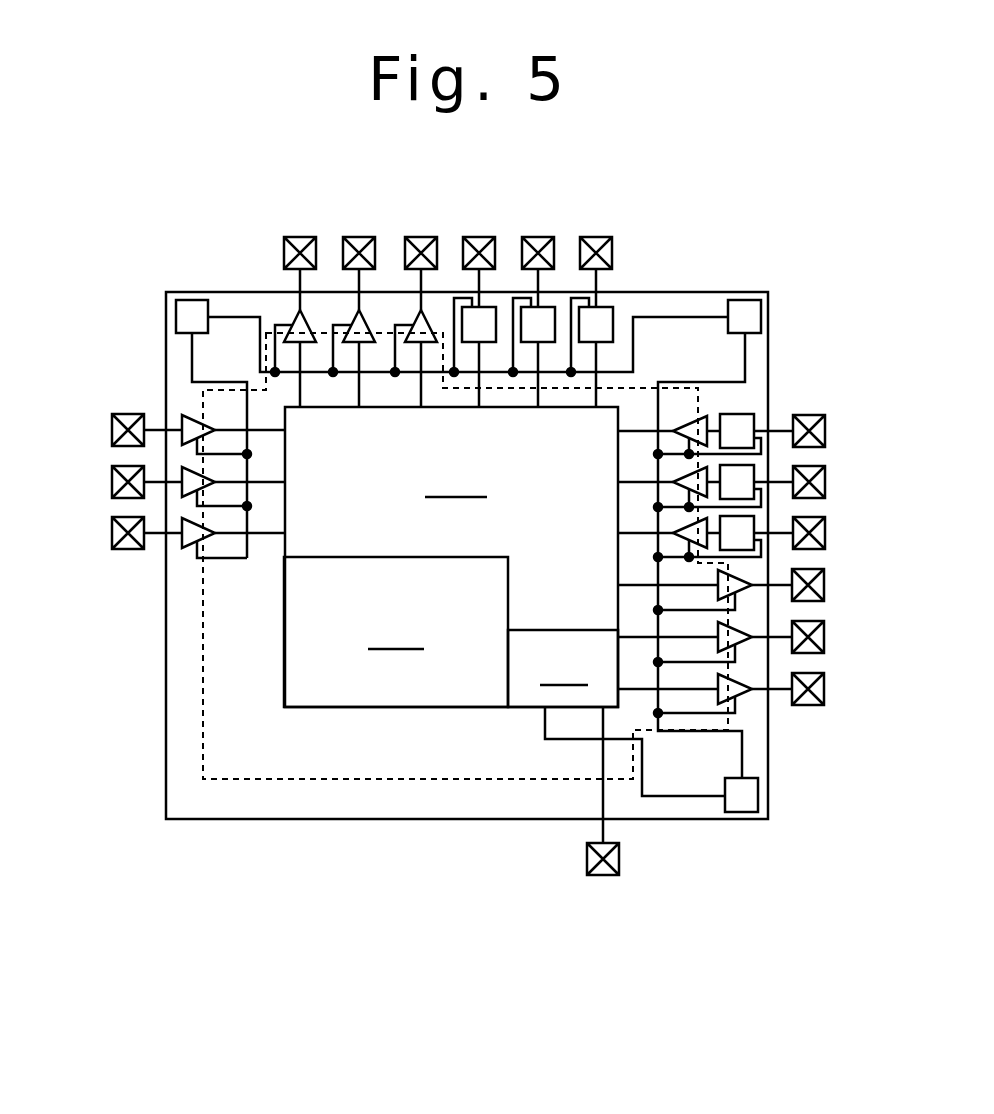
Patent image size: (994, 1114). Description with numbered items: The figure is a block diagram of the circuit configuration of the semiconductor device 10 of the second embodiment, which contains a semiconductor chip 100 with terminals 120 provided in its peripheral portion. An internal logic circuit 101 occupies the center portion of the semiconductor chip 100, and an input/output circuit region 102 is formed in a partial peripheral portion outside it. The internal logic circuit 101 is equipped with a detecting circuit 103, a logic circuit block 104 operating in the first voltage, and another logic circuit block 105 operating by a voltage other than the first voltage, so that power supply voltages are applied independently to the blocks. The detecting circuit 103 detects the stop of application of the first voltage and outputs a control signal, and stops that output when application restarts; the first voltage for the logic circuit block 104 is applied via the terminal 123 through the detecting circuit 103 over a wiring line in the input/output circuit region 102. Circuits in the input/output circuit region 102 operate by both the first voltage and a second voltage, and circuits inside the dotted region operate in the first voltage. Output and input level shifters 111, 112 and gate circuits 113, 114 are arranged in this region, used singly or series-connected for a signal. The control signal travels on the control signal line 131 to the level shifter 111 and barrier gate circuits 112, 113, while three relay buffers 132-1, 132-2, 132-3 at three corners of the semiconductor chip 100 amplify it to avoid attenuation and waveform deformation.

The semiconductor device 10 is at (86, 354).
The semiconductor chip 100 is at (282, 820).
The internal logic circuit 101 is at (568, 485).
The input/output circuit region 102 is at (753, 352).
The detecting circuit 103 is at (563, 668).
The logic circuit block 104 is at (451, 557).
The logic circuit block 105 is at (396, 632).
The level shifter 111 is at (367, 323).
The level shifter 112 is at (182, 422).
The gate circuit 113 is at (743, 413).
The gate circuit 114 is at (612, 305).
The terminal 120 is at (827, 582).
The terminal 123 is at (604, 875).
The control signal line 131 is at (665, 797).
The relay buffer 132-1 is at (762, 795).
The relay buffer 132-2 is at (750, 300).
The relay buffer 132-3 is at (188, 310).